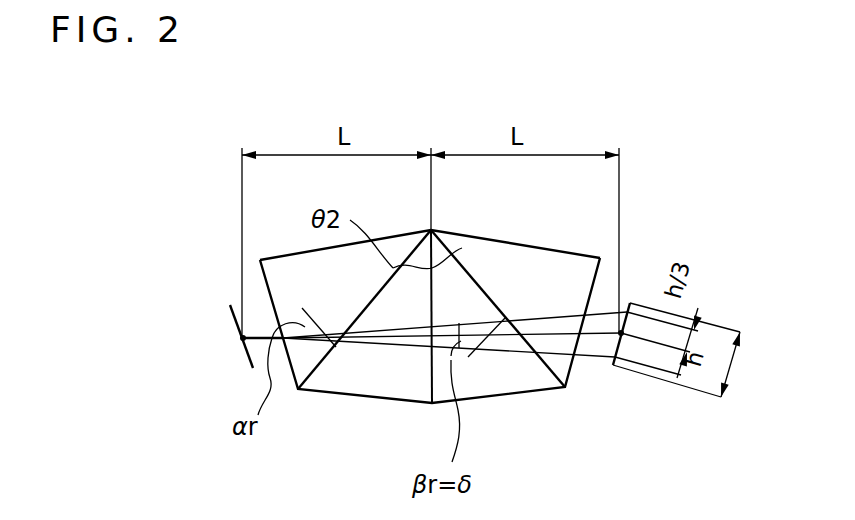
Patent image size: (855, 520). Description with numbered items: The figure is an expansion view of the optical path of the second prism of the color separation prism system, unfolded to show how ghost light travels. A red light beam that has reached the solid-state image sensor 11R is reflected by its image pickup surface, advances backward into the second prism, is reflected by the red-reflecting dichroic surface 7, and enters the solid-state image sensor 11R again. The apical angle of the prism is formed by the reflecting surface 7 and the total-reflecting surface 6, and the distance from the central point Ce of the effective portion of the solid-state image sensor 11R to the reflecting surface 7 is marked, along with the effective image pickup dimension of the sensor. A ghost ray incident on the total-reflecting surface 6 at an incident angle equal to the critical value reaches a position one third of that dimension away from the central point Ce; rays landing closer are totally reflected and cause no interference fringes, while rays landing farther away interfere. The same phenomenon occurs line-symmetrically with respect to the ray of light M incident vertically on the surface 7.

The total-reflecting surface 6 is at (325, 358).
The red-reflecting dichroic surface 7 is at (463, 243).
The solid-state image sensor 11R is at (252, 363).
The ray of light M is at (557, 336).
The central point Ce is at (243, 338).